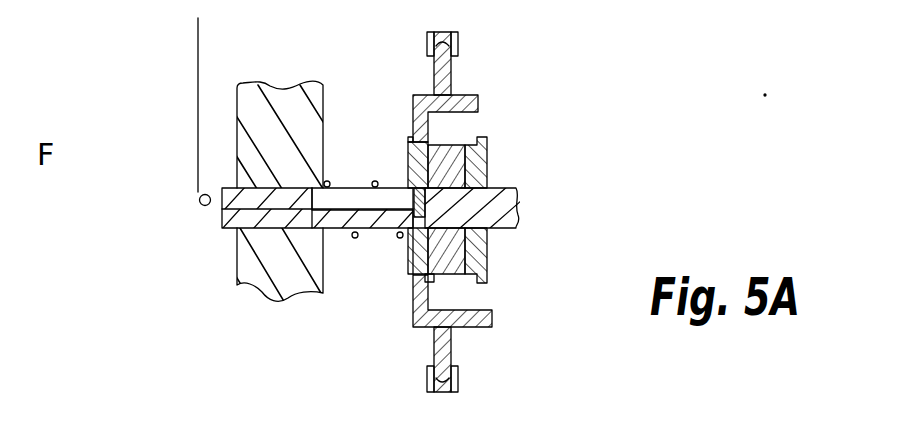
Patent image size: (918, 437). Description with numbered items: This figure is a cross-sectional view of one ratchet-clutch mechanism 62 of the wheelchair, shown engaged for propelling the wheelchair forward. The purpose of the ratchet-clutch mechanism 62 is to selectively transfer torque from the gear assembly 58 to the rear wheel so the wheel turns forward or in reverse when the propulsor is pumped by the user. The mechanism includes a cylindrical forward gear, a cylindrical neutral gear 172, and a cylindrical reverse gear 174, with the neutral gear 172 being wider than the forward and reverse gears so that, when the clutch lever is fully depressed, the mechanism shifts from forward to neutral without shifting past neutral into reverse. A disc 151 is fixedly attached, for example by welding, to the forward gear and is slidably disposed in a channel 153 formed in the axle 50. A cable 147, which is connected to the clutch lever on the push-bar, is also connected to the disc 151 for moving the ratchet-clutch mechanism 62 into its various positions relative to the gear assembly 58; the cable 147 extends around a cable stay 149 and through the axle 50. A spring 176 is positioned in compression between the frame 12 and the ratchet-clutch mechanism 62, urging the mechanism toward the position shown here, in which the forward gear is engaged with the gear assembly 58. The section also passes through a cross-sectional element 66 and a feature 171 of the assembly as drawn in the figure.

The frame 12 is at (251, 83).
The axle 50 is at (222, 232).
The gear assembly 58 is at (469, 94).
The ratchet-clutch mechanism 62 is at (511, 179).
The stud 66 is at (456, 35).
The cable 147 is at (198, 73).
The cable stay 149 is at (203, 205).
The disc 151 is at (408, 142).
The channel 153 is at (343, 198).
The pin 171 is at (410, 189).
The neutral gear 172 is at (480, 137).
The reverse gear 174 is at (490, 150).
The spring 176 is at (355, 238).